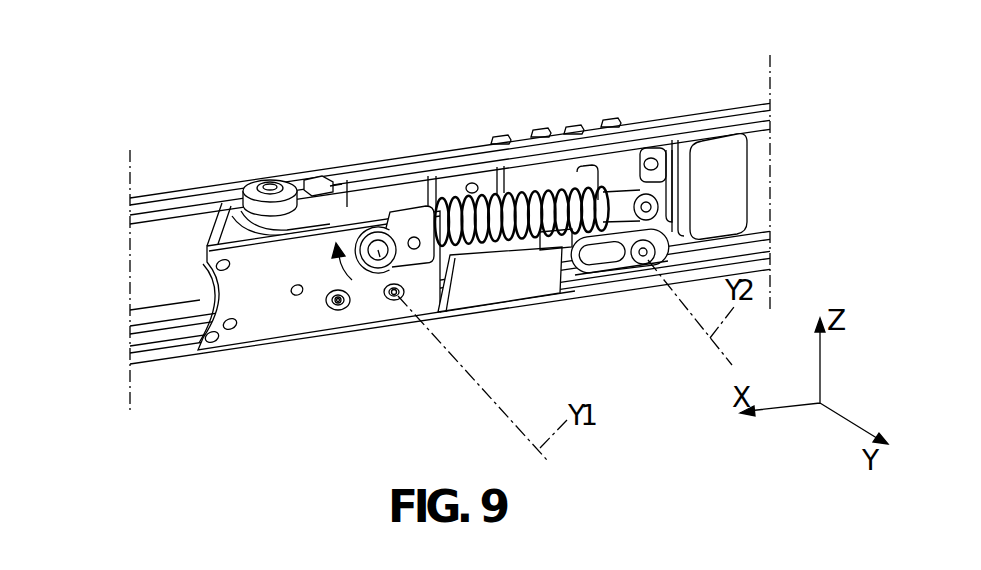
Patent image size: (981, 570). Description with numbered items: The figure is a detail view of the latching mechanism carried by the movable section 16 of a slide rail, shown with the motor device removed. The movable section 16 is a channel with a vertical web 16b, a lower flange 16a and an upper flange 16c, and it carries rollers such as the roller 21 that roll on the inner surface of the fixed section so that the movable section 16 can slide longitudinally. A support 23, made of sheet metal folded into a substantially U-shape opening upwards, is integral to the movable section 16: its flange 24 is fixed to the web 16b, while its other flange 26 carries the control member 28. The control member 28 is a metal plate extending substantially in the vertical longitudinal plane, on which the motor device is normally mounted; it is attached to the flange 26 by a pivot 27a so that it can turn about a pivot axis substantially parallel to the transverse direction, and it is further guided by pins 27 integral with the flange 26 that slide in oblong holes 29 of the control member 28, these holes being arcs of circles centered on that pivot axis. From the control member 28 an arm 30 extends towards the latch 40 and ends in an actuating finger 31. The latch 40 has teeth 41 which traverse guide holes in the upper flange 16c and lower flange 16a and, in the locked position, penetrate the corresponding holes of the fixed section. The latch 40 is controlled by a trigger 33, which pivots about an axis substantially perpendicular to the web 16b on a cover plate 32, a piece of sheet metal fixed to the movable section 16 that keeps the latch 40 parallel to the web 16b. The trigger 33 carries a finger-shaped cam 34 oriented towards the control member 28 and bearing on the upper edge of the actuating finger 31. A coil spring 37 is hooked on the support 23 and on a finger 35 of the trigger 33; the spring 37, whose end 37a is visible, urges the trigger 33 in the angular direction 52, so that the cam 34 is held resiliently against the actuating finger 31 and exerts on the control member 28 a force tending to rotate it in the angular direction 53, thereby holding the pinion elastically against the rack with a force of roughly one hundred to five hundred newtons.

The movable section 16 is at (401, 276).
The lower flange 16a is at (150, 353).
The vertical web 16b is at (170, 302).
The upper flange 16c is at (178, 212).
The roller 21 is at (257, 182).
The support 23 is at (350, 180).
The flange 24 is at (310, 178).
The flange 26 is at (334, 198).
The pins 27 is at (347, 307).
The pivot 27a is at (383, 247).
The control member 28 is at (238, 333).
The oblong holes 29 is at (328, 310).
The arm 30 is at (482, 280).
The actuating finger 31 is at (590, 280).
The cover plate 32 is at (758, 131).
The trigger 33 is at (663, 215).
The cam 34 is at (598, 258).
The finger 35 is at (646, 205).
The spring 37 is at (522, 168).
The spring end 37a is at (562, 250).
The latch 40 is at (552, 118).
The teeth 41 is at (607, 125).
The angular direction 52 is at (641, 258).
The angular direction 53 is at (357, 300).